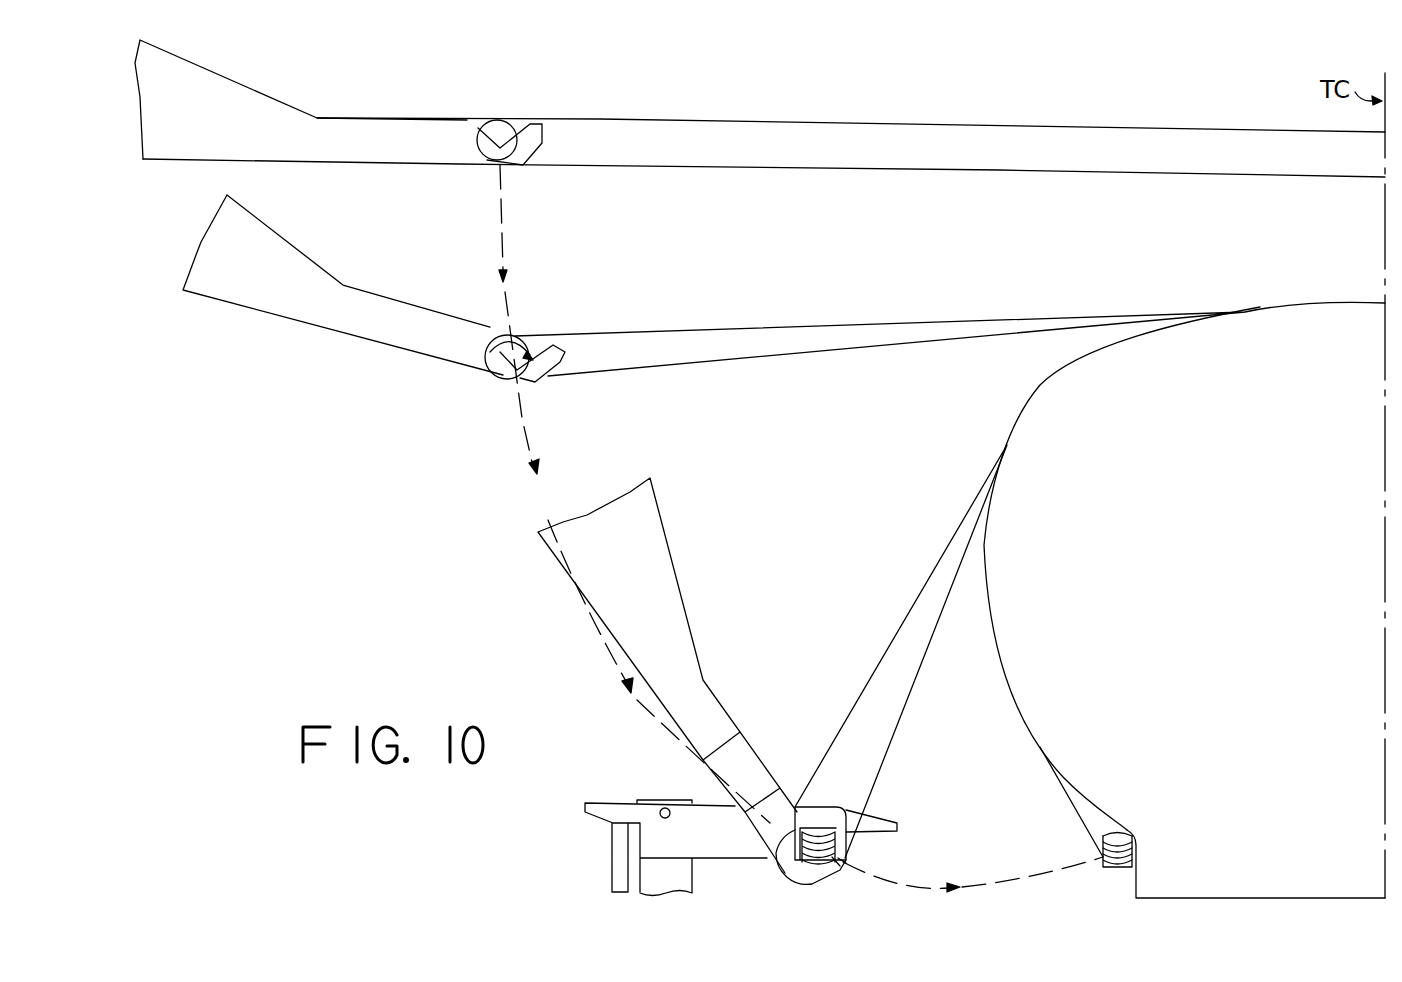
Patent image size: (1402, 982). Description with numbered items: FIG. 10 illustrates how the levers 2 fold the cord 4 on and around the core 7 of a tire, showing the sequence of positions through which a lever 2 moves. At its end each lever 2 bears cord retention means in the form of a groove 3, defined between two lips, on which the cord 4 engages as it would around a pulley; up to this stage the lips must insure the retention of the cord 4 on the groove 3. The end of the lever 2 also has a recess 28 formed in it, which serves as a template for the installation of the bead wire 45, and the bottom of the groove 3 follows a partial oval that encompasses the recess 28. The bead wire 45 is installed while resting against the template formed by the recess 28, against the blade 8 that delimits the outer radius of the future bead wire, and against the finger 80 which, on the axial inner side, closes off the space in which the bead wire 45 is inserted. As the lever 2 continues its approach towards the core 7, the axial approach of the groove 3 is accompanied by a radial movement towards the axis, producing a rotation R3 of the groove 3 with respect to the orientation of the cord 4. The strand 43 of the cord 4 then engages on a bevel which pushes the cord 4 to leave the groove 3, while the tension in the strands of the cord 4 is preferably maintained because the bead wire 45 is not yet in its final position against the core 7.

The lever 2 is at (190, 125).
The groove 3 is at (487, 160).
The cord 4 is at (750, 125).
The core 7 is at (1234, 565).
The blade 8 is at (870, 822).
The recess 28 is at (505, 125).
The strand 43 is at (850, 840).
The bead wire 45 is at (836, 862).
The finger 80 is at (827, 812).
The rotation of the groove R3 is at (527, 345).